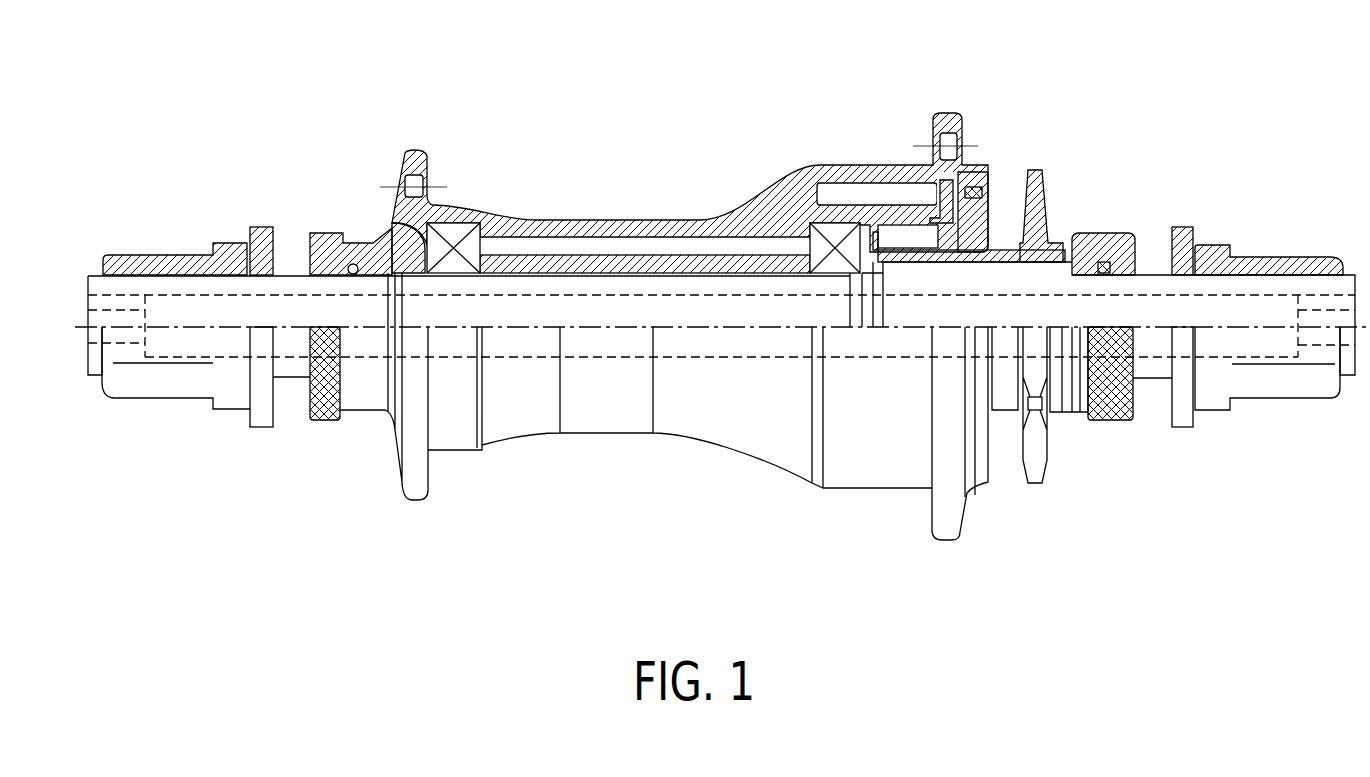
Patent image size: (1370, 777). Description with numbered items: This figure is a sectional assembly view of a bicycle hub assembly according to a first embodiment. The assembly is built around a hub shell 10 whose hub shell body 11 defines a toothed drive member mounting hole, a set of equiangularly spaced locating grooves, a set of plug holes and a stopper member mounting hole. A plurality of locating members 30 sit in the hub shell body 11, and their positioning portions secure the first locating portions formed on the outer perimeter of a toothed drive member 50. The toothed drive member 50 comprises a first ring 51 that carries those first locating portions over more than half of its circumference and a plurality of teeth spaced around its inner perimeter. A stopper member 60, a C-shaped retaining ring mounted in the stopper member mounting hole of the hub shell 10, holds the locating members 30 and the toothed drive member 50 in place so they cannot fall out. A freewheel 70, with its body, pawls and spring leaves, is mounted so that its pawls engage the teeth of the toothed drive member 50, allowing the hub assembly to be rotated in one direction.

The hub shell 10 is at (664, 323).
The hub shell body 11 is at (643, 210).
The locating member 30 is at (845, 190).
The toothed drive member 50 is at (914, 160).
The first ring 51 is at (913, 203).
The stopper member 60 is at (950, 177).
The freewheel 70 is at (992, 185).